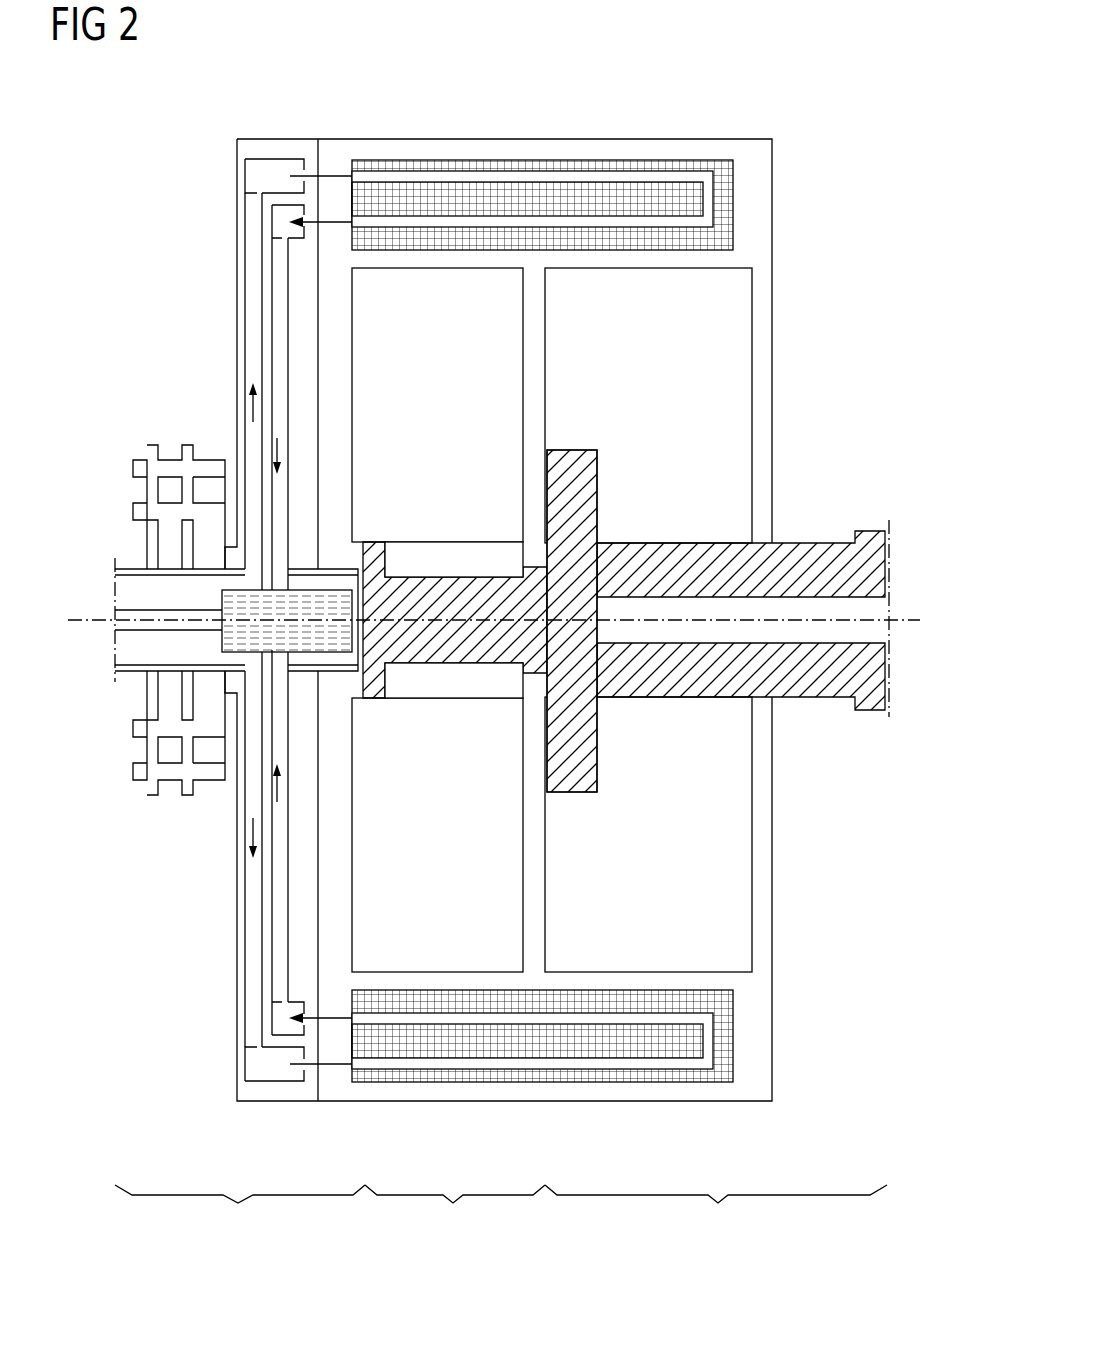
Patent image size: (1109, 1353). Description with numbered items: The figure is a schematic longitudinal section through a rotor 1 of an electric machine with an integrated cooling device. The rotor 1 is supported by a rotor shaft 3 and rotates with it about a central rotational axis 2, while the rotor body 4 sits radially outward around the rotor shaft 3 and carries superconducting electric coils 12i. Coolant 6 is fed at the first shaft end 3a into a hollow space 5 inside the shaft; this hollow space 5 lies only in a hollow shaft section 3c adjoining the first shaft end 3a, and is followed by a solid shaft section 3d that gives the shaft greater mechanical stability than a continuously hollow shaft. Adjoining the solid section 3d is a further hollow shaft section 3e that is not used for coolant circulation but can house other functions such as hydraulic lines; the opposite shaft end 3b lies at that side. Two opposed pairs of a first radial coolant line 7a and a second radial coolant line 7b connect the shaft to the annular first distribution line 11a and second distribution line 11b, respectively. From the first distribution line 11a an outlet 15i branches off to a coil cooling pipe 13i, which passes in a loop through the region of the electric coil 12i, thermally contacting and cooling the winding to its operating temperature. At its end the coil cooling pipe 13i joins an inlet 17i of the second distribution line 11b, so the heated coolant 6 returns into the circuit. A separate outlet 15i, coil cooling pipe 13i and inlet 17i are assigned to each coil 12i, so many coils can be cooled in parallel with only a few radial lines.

The rotor 1 is at (256, 82).
The central rotational axis 2 is at (905, 615).
The rotor shaft 3 is at (805, 548).
The first shaft end 3a is at (100, 588).
The second shaft section end 3b is at (900, 655).
The hollow shaft section 3c is at (240, 1211).
The solid shaft section 3d is at (455, 1211).
The further hollow shaft section 3e is at (716, 1211).
The rotor body 4 is at (856, 309).
The hollow space 5 is at (337, 595).
The coolant 6 is at (302, 610).
The first radial coolant line 7a is at (252, 327).
The second radial coolant line 7b is at (277, 293).
The first distribution line 11a is at (257, 181).
The second distribution line 11b is at (277, 227).
The electric coil 12i is at (728, 179).
The coil cooling pipe 13i is at (708, 210).
The outlet 15i is at (308, 160).
The inlet 17i is at (308, 227).